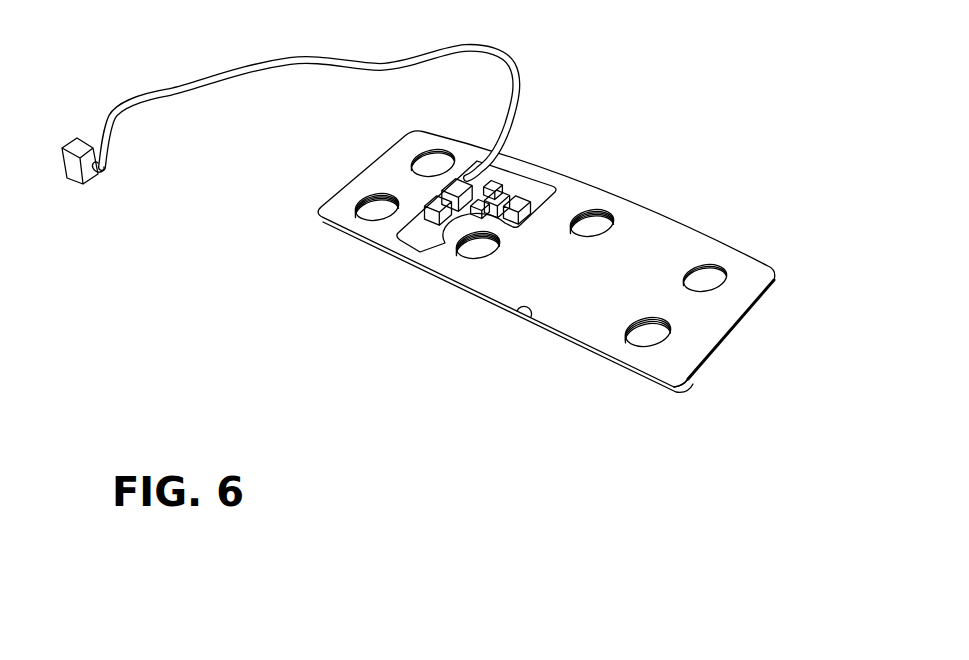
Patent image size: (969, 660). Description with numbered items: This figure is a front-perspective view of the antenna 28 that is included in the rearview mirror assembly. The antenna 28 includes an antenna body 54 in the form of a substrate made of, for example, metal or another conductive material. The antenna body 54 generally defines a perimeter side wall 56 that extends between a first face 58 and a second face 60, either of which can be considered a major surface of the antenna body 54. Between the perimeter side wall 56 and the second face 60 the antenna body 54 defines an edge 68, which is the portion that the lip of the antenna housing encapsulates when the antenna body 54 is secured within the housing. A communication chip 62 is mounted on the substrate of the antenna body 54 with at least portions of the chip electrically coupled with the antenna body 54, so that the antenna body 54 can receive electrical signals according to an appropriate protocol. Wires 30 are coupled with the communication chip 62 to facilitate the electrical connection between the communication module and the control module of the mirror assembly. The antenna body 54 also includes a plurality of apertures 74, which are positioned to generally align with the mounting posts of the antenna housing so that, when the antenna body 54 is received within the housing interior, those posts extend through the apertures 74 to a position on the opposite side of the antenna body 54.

The antenna 28 is at (579, 298).
The wires 30 is at (493, 52).
The antenna body 54 is at (716, 303).
The perimeter side wall 56 is at (673, 394).
The first face 58 is at (647, 273).
The second face 60 is at (601, 365).
The communication chip 62 is at (535, 187).
The edge 68 is at (530, 309).
The apertures 74 is at (372, 193).